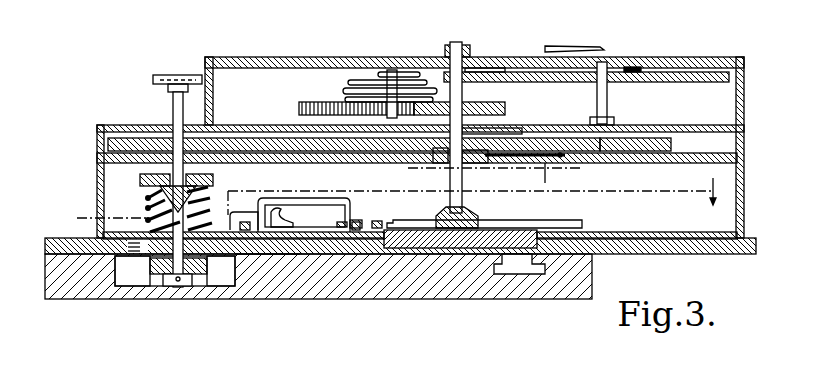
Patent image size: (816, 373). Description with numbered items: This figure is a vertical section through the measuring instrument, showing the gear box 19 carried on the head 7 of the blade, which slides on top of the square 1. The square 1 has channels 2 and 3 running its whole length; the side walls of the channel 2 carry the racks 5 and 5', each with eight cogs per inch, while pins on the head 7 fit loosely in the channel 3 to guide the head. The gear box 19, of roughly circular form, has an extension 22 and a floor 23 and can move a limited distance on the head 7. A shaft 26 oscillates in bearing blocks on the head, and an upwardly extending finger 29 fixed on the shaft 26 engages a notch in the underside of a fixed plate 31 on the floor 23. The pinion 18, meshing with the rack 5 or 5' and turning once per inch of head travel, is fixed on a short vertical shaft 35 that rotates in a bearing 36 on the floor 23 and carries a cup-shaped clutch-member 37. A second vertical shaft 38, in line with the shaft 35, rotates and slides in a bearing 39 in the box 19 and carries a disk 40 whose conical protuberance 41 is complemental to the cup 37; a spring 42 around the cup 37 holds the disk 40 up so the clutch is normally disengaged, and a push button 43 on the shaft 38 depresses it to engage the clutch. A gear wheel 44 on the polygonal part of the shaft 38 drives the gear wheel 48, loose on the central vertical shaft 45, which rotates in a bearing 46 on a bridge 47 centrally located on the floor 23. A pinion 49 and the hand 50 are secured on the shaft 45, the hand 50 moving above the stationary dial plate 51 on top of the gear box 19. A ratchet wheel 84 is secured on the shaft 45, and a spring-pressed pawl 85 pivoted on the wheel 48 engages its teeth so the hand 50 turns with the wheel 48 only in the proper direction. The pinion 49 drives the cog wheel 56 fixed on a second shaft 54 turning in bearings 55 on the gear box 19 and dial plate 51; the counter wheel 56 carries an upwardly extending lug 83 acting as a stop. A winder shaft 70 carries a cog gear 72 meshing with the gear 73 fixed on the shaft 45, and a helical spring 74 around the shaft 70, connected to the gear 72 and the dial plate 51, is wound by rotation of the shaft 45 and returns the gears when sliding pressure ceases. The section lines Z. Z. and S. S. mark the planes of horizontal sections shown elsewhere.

The square 1 is at (590, 267).
The channel 2 is at (168, 261).
The channel 3 is at (530, 270).
The rack 5 is at (210, 297).
The rack 5' is at (103, 297).
The head 7 is at (46, 252).
The pinion 18 is at (143, 276).
The gear box 19 is at (100, 140).
The extension 22 is at (744, 70).
The floor 23 is at (255, 262).
The shaft 26 is at (322, 226).
The finger 29 is at (318, 229).
The fixed plate 31 is at (318, 204).
The short vertical shaft 35 is at (225, 222).
The bearing 36 is at (283, 207).
The cup-shaped clutch-member 37 is at (152, 196).
The second vertical shaft 38 is at (176, 113).
The bearing 39 is at (197, 147).
The disk 40 is at (143, 148).
The conical protuberance 41 is at (145, 205).
The spring 42 is at (147, 228).
The push button 43 is at (180, 75).
The gear wheel 44 is at (147, 173).
The vertical shaft 45 is at (489, 72).
The bearing 46 is at (470, 210).
The bridge 47 is at (423, 222).
The gear wheel 48 is at (650, 148).
The pinion 49 is at (459, 93).
The hand 50 is at (502, 68).
The dial plate 51 is at (624, 67).
The vertical second shaft 54 is at (574, 42).
The bearings 55 is at (612, 121).
The cog wheel 56 is at (689, 67).
The winder shaft 70 is at (404, 72).
The cog gear 72 is at (300, 108).
The gear 73 is at (505, 109).
The helical spring 74 is at (377, 83).
The lug 83 is at (620, 66).
The ratchet wheel 84 is at (438, 170).
The spring-pressed pawl 85 is at (513, 137).
The section line S. S. S is at (486, 172).
The section line Z. Z. Z is at (430, 203).